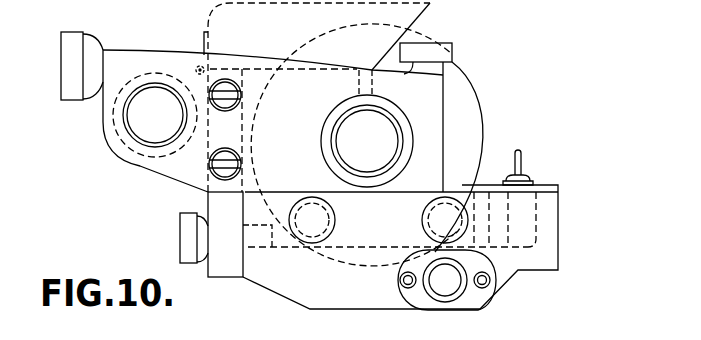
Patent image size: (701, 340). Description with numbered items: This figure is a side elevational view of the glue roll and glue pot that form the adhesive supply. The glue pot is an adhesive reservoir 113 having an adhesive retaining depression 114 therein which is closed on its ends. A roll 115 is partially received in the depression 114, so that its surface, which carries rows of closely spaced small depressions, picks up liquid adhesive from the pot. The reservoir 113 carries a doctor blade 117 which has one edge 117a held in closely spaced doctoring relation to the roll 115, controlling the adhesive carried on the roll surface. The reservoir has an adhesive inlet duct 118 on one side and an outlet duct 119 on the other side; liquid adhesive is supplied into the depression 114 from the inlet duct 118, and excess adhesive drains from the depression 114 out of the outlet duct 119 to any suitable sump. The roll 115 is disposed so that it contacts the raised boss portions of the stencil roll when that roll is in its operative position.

The adhesive reservoir 113 is at (558, 238).
The adhesive retaining depression 114 is at (356, 258).
The roll 115 is at (476, 93).
The doctor blade 117 is at (553, 185).
The edge 117a is at (478, 190).
The adhesive inlet duct 118 is at (272, 250).
The outlet duct 119 is at (412, 243).